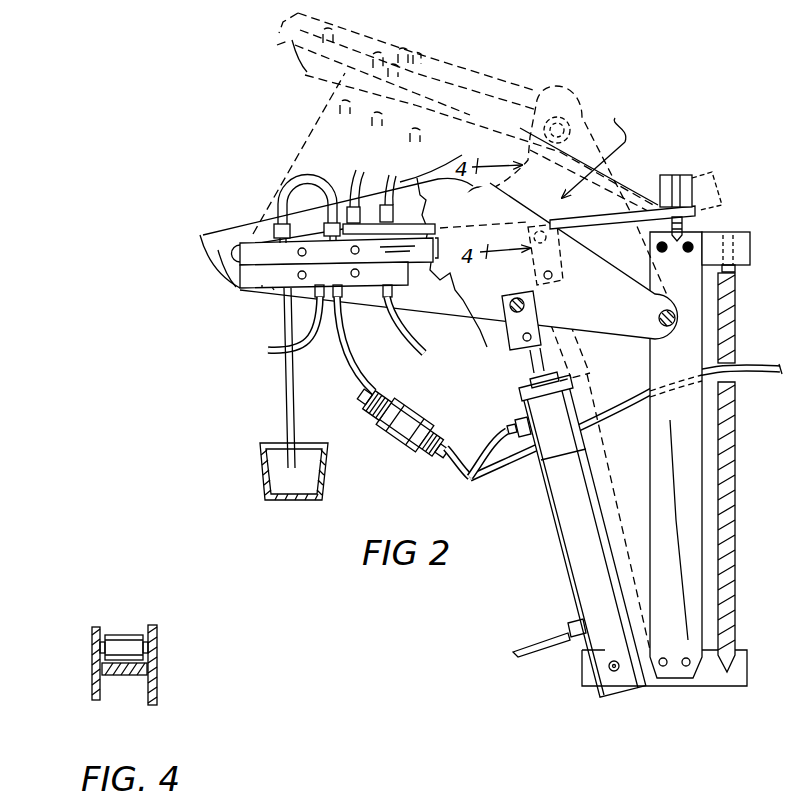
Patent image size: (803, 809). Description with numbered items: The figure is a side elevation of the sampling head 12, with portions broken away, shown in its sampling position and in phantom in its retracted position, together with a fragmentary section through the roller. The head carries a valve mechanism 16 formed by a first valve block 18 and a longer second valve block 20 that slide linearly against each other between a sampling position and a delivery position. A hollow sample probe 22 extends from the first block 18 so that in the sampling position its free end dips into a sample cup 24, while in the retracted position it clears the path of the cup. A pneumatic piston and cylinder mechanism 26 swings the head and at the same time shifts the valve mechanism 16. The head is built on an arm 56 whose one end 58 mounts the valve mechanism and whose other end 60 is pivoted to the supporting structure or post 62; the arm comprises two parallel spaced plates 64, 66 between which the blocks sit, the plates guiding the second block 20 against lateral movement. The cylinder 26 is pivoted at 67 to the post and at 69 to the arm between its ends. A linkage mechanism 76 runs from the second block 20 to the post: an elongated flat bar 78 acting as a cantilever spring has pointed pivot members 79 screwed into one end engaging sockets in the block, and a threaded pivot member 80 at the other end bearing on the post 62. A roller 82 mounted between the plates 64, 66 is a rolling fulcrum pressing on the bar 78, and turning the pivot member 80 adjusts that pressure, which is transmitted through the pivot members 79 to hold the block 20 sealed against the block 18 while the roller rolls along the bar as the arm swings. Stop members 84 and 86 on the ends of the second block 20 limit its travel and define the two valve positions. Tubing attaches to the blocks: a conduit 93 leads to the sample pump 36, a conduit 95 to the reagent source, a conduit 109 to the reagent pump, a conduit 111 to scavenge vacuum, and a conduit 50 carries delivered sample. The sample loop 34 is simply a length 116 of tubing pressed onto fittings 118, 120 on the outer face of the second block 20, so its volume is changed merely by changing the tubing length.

In FIG. 2, the sampling head 12 is at (182, 265).
In FIG. 2, the valve mechanism 16 is at (273, 283).
In FIG. 2, the first valve block 18 is at (272, 283).
In FIG. 2, the second valve block 20 is at (267, 243).
In FIG. 2, the sample probe 22 is at (285, 398).
In FIG. 2, the sample cup 24 is at (262, 477).
In FIG. 2, the piston and cylinder mechanism 26 is at (590, 563).
In FIG. 2, the sample loop 34 is at (300, 176).
In FIG. 2, the sample pump 36 is at (402, 442).
In FIG. 2, the conduit 50 is at (306, 345).
In FIG. 2, the arm 56 is at (197, 246).
In FIG. 2, the arm end 58 is at (218, 253).
In FIG. 2, the arm end 60 is at (645, 302).
In FIG. 2, the supporting structure 62 is at (687, 350).
In FIG. 2, the plate 64 is at (625, 293).
In FIG. 4, the plate 64 is at (157, 686).
In FIG. 2, the plate 66 is at (436, 297).
In FIG. 4, the plate 66 is at (92, 686).
In FIG. 2, the pivot connection 67 is at (618, 671).
In FIG. 2, the pivot connection 69 is at (516, 298).
In FIG. 2, the linkage mechanism 76 is at (600, 145).
In FIG. 2, the flat bar 78 is at (650, 215).
In FIG. 4, the flat bar 78 is at (125, 676).
In FIG. 2, the pivot members 79 is at (342, 262).
In FIG. 2, the pivot member 80 is at (700, 225).
In FIG. 2, the roller 82 is at (545, 95).
In FIG. 4, the roller 82 is at (122, 648).
In FIG. 2, the stop member 84 is at (270, 275).
In FIG. 2, the stop member 86 is at (480, 330).
In FIG. 2, the conduit 93 is at (352, 350).
In FIG. 2, the conduit 95 is at (407, 325).
In FIG. 2, the conduit 109 is at (400, 182).
In FIG. 2, the conduit 111 is at (358, 172).
In FIG. 2, the length of tubing 116 is at (282, 186).
In FIG. 2, the fitting 118 is at (273, 287).
In FIG. 2, the fitting 120 is at (335, 232).